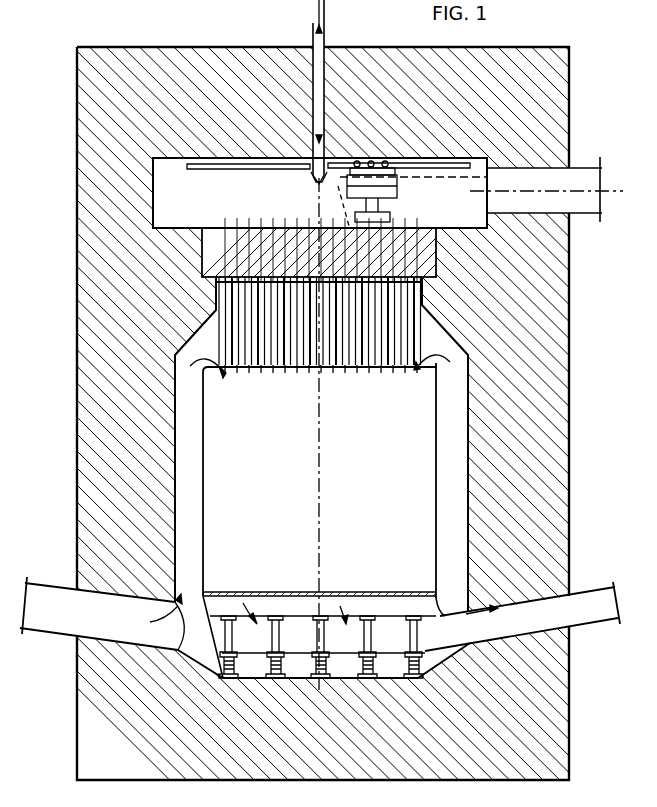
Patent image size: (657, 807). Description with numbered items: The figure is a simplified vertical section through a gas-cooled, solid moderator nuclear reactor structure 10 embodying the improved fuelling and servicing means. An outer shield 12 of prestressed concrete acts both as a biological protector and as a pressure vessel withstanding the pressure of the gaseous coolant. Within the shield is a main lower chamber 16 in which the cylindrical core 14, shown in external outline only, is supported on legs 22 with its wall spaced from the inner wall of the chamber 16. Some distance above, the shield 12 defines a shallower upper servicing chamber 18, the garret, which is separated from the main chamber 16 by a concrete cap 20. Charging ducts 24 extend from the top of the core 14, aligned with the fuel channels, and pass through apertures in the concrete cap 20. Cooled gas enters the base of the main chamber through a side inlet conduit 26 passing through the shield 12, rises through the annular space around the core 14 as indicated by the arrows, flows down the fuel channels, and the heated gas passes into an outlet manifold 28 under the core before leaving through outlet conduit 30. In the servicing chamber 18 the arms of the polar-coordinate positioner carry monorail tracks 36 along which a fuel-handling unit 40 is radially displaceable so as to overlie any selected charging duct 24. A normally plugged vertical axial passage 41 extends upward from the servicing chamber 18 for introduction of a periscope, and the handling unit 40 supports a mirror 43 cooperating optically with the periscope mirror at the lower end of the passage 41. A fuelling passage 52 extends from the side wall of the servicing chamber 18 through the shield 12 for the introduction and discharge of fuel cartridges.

The reactor structure 10 is at (190, 47).
The outer shield 12 is at (247, 113).
The cylindrical core 14 is at (355, 478).
The main lower chamber 16 is at (462, 445).
The upper servicing chamber 18 is at (209, 199).
The concrete cap 20 is at (268, 236).
The legs 22 is at (278, 622).
The charging ducts 24 is at (310, 366).
The side inlet conduit 26 is at (115, 627).
The outlet manifold 28 is at (396, 641).
The outlet conduit 30 is at (539, 628).
The monorail track 36 is at (425, 178).
The fuel-handling unit 40 is at (394, 186).
The vertical axial passage 41 is at (325, 88).
The mirror 43 is at (342, 186).
The fuelling passage 52 is at (530, 178).